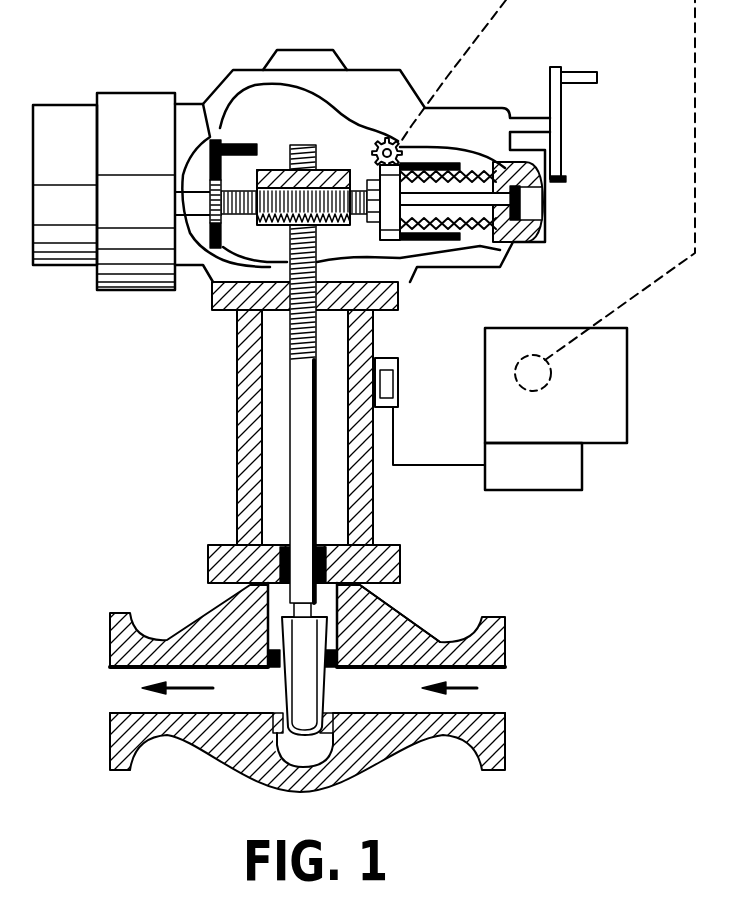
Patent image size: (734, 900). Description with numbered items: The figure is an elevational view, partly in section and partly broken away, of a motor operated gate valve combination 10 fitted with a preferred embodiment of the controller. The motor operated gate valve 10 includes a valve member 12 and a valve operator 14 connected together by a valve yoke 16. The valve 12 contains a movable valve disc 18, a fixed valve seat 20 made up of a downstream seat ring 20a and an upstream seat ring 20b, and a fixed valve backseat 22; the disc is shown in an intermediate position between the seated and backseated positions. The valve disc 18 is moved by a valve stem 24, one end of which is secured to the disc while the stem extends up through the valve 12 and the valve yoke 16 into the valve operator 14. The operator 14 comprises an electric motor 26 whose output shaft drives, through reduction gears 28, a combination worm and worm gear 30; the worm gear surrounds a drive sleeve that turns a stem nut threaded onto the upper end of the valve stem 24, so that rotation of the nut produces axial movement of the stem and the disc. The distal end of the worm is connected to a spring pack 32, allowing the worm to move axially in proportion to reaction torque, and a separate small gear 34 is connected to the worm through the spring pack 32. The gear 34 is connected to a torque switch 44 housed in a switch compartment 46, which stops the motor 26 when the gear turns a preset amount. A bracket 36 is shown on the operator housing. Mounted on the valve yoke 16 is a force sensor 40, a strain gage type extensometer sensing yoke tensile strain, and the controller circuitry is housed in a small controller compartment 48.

The motor operated gate valve combination 10 is at (313, 42).
The valve member 12 is at (344, 693).
The valve operator 14 is at (240, 85).
The valve yoke 16 is at (360, 328).
The valve disc 18 is at (293, 657).
The valve seat 20 is at (372, 628).
The downstream seat ring 20a is at (277, 722).
The upstream seat ring 20b is at (337, 727).
The valve backseat 22 is at (320, 577).
The valve stem 24 is at (295, 515).
The motor 26 is at (120, 110).
The reduction gears 28 is at (210, 135).
The worm and worm gear 30 is at (316, 168).
The spring pack 32 is at (430, 165).
The gear 34 is at (392, 140).
The bracket 36 is at (565, 72).
The force sensor 40 is at (398, 376).
The torque switch 44 is at (520, 356).
The switch compartment 46 is at (627, 373).
The controller compartment 48 is at (568, 467).